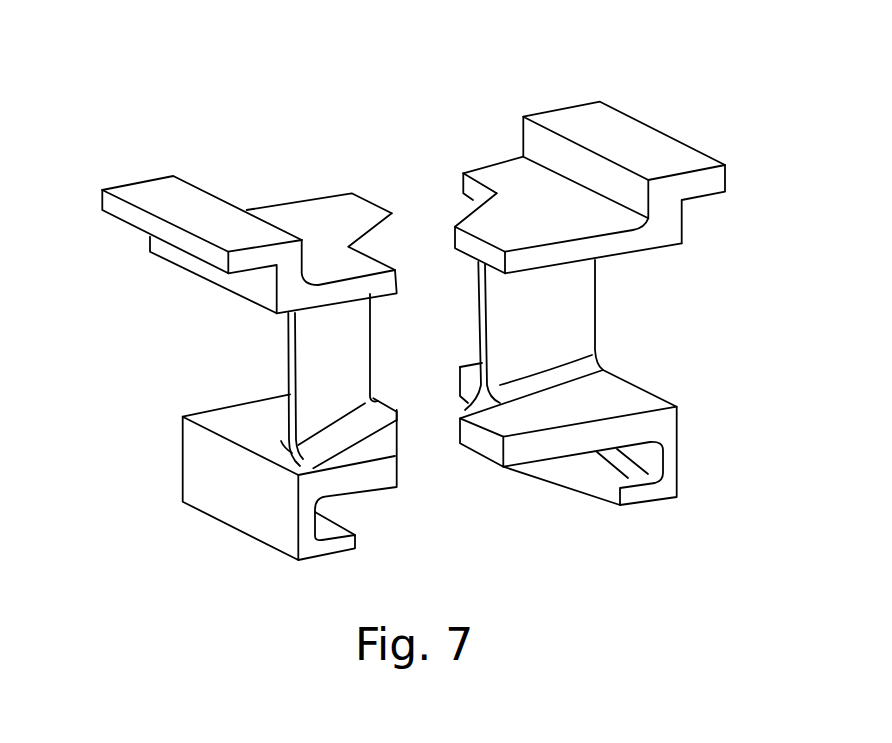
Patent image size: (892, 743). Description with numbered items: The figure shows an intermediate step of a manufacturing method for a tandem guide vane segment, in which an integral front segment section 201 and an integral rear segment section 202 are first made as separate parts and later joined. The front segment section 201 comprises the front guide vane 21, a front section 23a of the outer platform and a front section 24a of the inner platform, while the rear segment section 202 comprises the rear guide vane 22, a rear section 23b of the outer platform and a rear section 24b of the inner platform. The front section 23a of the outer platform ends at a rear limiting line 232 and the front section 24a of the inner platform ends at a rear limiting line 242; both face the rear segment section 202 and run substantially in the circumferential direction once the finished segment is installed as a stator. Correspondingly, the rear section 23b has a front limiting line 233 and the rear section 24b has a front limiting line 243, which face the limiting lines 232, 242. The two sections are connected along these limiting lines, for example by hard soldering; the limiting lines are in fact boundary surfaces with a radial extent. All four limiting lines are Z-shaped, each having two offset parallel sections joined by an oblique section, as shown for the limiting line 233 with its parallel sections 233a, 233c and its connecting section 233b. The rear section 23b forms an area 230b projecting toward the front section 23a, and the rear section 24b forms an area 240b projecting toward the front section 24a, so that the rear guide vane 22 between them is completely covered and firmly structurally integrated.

The integral front segment section 201 is at (143, 172).
The integral rear segment section 202 is at (667, 114).
The front section of the outer platform 23a is at (323, 208).
The rear section of the outer platform 23b is at (480, 170).
The rear limiting line 232 is at (384, 229).
The front limiting line 233 is at (457, 216).
The parallel section 233a is at (463, 175).
The connecting section 233b is at (451, 209).
The parallel section 233c is at (468, 262).
The projecting area of the rear outer platform section 230b is at (508, 238).
The front guide vane 21 is at (289, 347).
The rear guide vane 22 is at (600, 297).
The front limiting line 243 is at (468, 388).
The rear limiting line 242 is at (383, 432).
The front section of the inner platform 24a is at (383, 487).
The rear section of the inner platform 24b is at (678, 423).
The projecting area of the rear inner platform section 240b is at (518, 425).